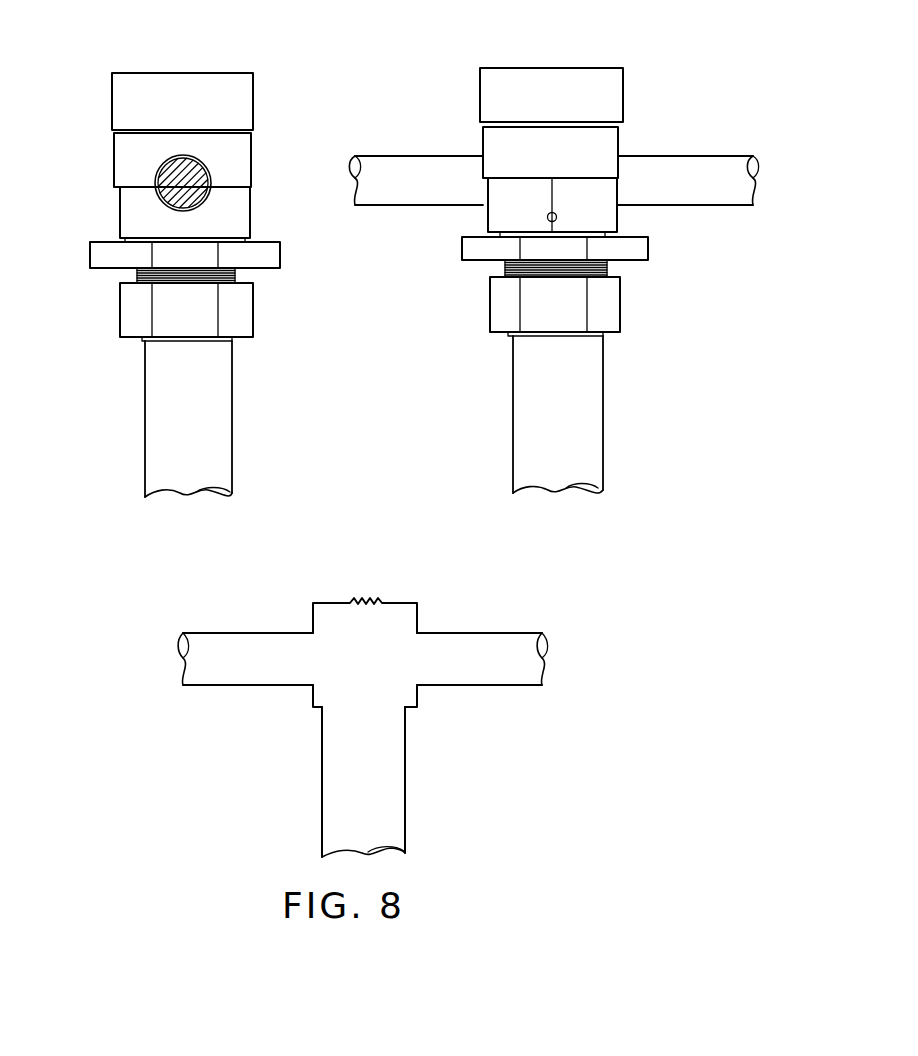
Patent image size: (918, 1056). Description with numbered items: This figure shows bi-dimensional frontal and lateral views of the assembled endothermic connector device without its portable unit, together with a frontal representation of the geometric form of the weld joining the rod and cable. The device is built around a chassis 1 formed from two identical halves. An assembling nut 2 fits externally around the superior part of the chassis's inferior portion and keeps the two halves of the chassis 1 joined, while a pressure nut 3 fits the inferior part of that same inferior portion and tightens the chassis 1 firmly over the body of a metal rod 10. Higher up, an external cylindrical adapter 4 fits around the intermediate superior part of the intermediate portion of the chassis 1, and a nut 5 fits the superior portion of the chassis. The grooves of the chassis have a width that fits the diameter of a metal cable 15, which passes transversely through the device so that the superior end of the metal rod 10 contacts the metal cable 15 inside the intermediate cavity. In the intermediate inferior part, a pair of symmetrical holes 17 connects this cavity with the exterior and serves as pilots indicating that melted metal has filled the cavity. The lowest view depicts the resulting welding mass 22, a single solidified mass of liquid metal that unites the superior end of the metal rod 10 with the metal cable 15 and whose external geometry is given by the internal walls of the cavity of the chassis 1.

The chassis 1 is at (120, 212).
The assembling nut 2 is at (650, 245).
The pressure nut 3 is at (620, 303).
The external cylindrical adapter 4 is at (252, 142).
The nut 5 is at (253, 102).
The metal rod 10 is at (603, 405).
The metal cable 15 is at (205, 180).
The symmetrical holes 17 is at (557, 217).
The welding mass 22 is at (367, 670).